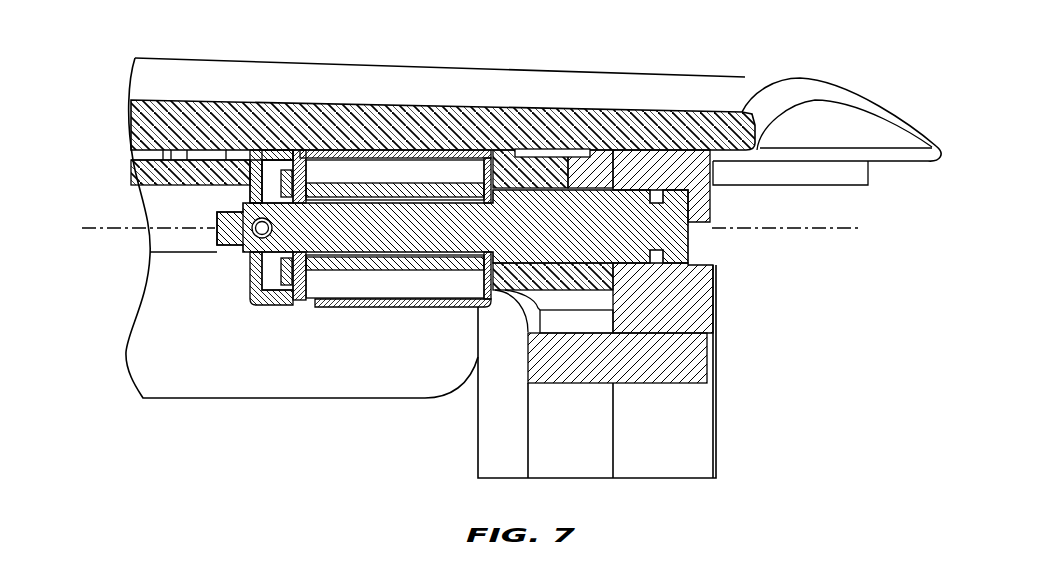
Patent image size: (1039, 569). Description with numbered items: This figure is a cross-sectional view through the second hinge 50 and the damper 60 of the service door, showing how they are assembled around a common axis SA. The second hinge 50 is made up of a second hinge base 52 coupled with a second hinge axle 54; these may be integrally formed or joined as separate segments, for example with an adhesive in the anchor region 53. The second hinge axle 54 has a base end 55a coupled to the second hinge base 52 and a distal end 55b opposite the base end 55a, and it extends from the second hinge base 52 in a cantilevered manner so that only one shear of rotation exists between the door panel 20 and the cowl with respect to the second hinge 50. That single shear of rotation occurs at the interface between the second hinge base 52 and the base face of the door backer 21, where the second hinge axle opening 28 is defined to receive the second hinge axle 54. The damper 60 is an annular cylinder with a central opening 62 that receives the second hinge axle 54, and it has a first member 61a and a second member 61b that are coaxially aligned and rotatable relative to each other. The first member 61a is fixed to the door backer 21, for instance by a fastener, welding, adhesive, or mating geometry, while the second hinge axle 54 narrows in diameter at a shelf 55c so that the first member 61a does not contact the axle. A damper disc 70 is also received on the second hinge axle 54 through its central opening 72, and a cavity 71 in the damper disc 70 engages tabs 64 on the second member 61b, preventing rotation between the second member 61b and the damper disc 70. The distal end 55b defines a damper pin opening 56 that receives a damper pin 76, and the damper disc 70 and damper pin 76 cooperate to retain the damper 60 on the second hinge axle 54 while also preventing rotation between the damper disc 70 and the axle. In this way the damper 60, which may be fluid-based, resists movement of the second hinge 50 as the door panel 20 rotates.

The door panel 20 is at (435, 80).
The door backer 21 is at (535, 172).
The second hinge axle opening 28 is at (566, 184).
The anchor region 53 is at (657, 196).
The second hinge axle 54 is at (560, 242).
The second hinge base 52 is at (680, 376).
The second hinge 50 is at (740, 308).
The base end 55a is at (660, 239).
The distal end 55b is at (205, 214).
The shelf 55c is at (498, 292).
The damper pin 76 is at (256, 234).
The damper disc 70 is at (257, 298).
The cavity 71 is at (278, 160).
The central opening 72 is at (257, 190).
The damper pin opening 56 is at (253, 260).
The tabs 64 is at (278, 275).
The damper 60 is at (447, 310).
The first member 61a is at (340, 302).
The second member 61b is at (386, 275).
The central opening 62 is at (378, 192).
The rotation axis SA is at (128, 233).